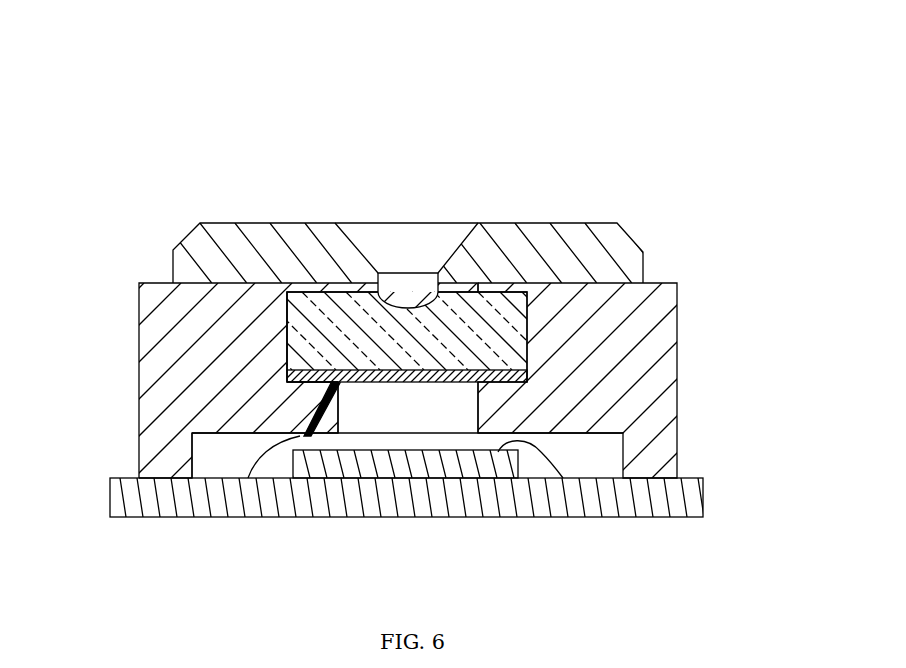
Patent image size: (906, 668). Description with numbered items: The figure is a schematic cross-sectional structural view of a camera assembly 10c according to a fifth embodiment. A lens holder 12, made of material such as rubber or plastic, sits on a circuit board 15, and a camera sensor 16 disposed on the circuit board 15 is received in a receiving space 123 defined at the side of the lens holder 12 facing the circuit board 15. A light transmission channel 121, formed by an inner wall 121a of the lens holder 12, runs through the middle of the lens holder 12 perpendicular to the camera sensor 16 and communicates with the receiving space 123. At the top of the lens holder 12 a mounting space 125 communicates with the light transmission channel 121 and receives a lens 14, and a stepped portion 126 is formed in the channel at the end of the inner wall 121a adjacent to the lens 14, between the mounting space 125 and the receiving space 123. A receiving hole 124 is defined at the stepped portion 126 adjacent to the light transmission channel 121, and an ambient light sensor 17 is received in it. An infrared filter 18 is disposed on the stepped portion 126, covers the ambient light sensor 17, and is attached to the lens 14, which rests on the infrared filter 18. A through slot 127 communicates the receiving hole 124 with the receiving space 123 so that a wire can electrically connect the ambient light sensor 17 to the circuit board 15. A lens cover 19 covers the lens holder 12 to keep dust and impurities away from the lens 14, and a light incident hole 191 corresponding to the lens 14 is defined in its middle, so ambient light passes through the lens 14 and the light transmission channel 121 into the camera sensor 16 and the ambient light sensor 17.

The camera assembly 10c is at (372, 88).
The lens holder 12 is at (655, 372).
The light transmission channel 121 is at (459, 408).
The inner wall 121a is at (478, 420).
The receiving space 123 is at (223, 468).
The receiving hole 124 is at (332, 386).
The mounting space 125 is at (288, 352).
The stepped portion 126 is at (336, 391).
The through slot 127 is at (330, 398).
The lens 14 is at (350, 305).
The circuit board 15 is at (627, 500).
The camera sensor 16 is at (310, 460).
The ambient light sensor 17 is at (340, 386).
The infrared filter 18 is at (530, 378).
The lens cover 19 is at (498, 232).
The light incident hole 191 is at (425, 233).